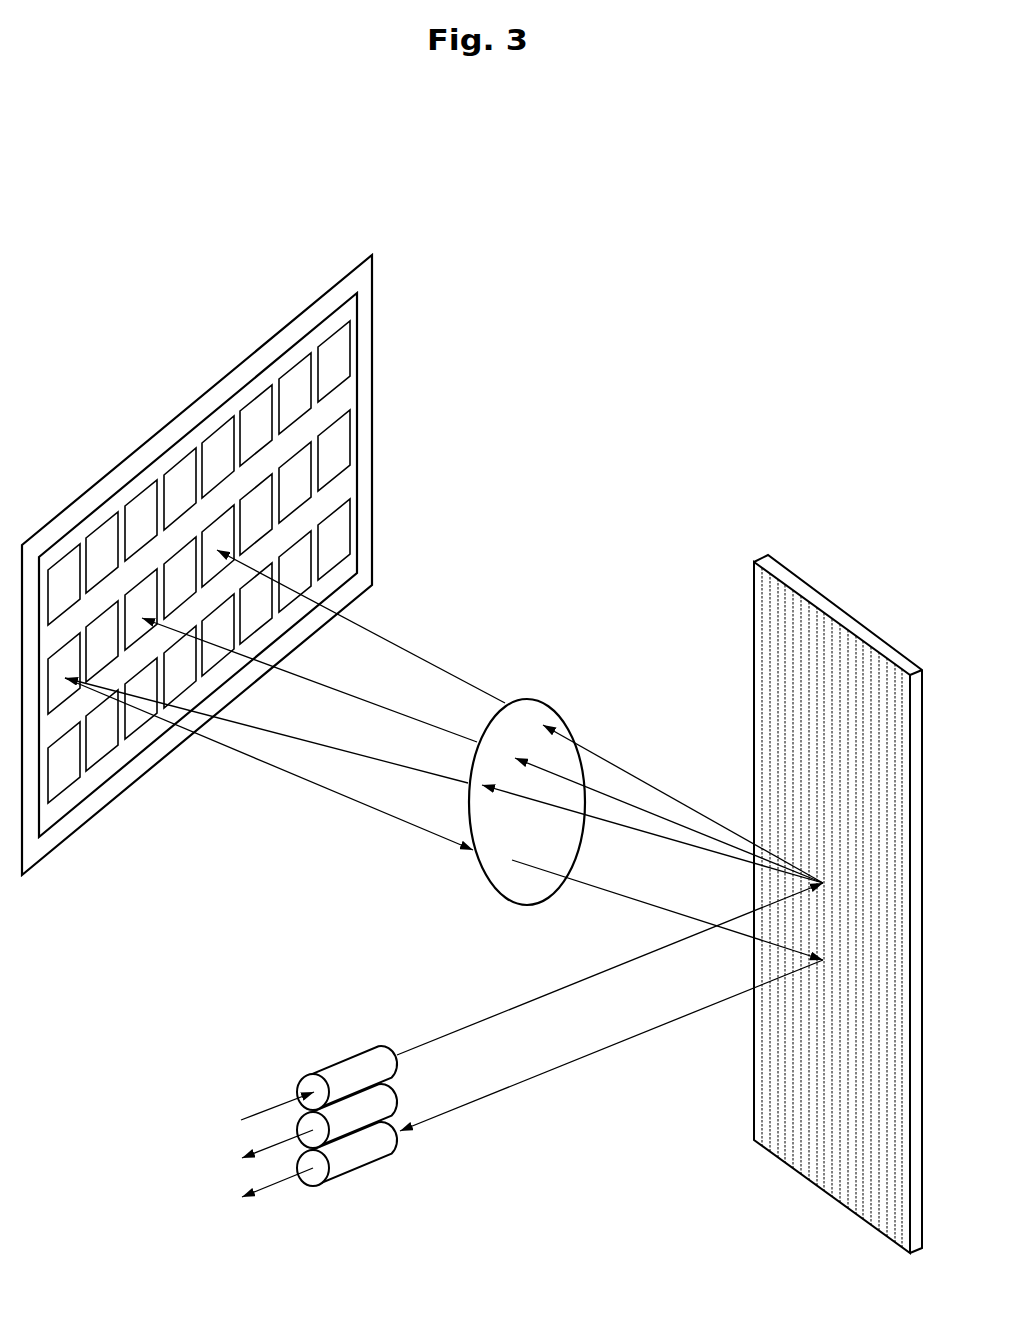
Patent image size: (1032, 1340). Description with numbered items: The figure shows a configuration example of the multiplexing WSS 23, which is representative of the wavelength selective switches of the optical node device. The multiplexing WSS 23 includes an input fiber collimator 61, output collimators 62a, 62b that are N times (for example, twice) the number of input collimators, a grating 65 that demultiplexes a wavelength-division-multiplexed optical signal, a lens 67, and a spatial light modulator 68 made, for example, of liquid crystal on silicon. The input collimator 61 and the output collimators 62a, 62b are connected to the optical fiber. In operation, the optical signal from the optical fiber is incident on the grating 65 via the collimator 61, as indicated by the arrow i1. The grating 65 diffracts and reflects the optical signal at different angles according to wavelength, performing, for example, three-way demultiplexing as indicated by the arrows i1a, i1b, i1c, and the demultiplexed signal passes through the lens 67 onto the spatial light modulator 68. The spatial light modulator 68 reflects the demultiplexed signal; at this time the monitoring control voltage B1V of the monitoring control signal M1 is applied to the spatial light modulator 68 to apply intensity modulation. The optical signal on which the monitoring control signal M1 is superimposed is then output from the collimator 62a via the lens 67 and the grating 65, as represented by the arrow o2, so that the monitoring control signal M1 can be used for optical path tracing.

The multiplexing WSS 23 is at (656, 345).
The spatial light modulator 68 is at (225, 377).
The monitoring control voltage B1V is at (127, 455).
The grating 65 is at (815, 589).
The lens 67 is at (551, 702).
The input fiber collimator 61 is at (386, 1117).
The output collimator 62a is at (355, 1173).
The output collimator 62b is at (399, 1089).
The arrow i1a is at (420, 656).
The arrow i1b is at (320, 679).
The arrow i1c is at (310, 740).
The arrow o2 is at (330, 792).
The arrow i1 is at (485, 1018).
The monitoring control signal M1 is at (234, 1157).